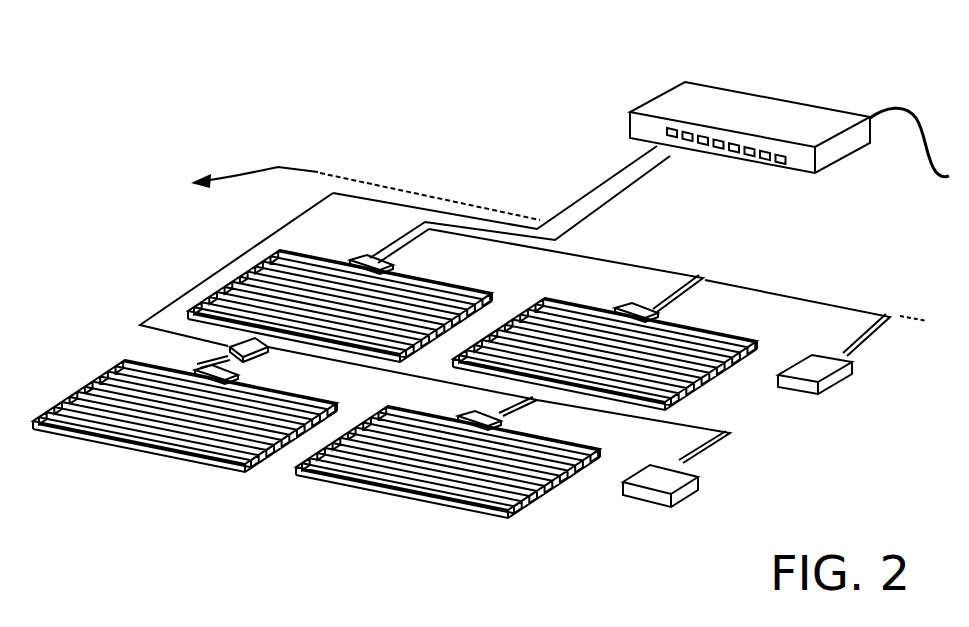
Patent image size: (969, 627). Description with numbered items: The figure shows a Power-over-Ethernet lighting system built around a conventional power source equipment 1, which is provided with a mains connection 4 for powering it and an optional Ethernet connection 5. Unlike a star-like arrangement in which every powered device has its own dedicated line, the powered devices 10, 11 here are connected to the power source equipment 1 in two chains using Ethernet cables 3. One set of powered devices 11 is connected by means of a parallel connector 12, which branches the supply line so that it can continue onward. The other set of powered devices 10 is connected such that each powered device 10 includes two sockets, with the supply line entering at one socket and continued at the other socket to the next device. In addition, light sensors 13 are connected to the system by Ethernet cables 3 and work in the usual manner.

The power source equipment 1 is at (771, 96).
The Ethernet cable 3 is at (637, 155).
The mains connection 4 is at (913, 167).
The Ethernet connection 5 is at (278, 167).
The powered device 10 is at (455, 279).
The powered device 11 is at (128, 450).
The parallel connector 12 is at (228, 348).
The light sensor 13 is at (857, 387).